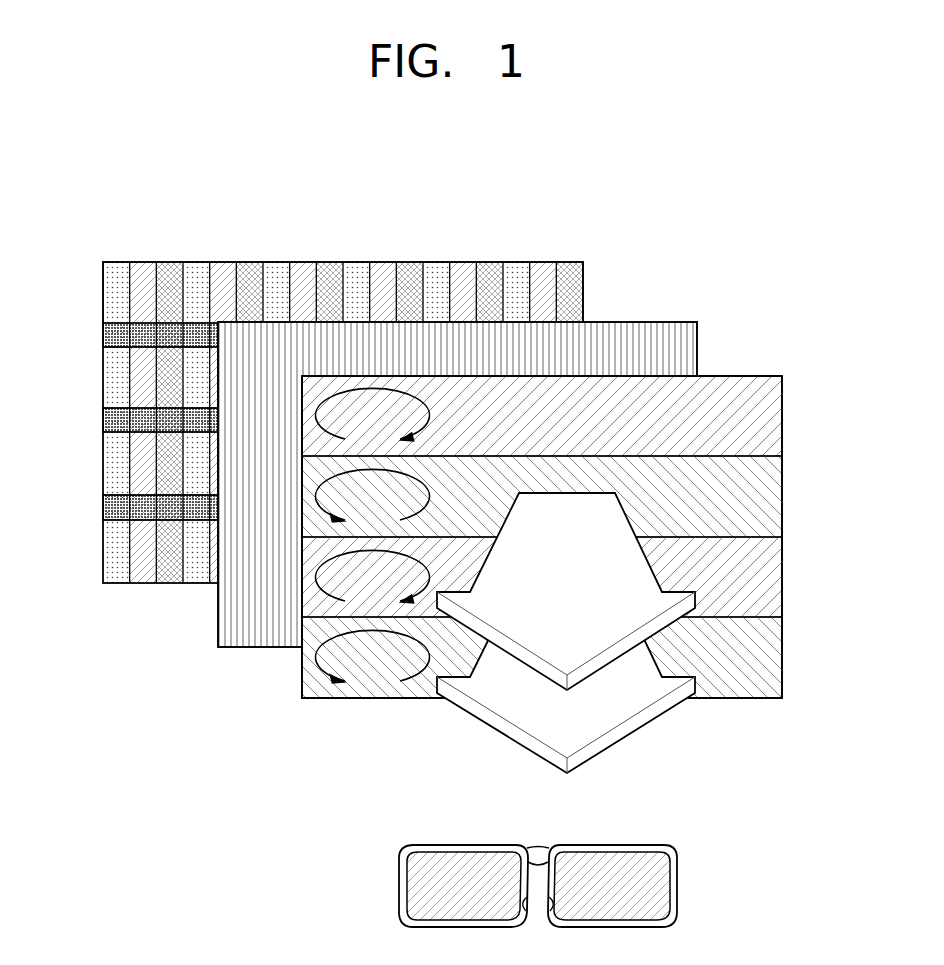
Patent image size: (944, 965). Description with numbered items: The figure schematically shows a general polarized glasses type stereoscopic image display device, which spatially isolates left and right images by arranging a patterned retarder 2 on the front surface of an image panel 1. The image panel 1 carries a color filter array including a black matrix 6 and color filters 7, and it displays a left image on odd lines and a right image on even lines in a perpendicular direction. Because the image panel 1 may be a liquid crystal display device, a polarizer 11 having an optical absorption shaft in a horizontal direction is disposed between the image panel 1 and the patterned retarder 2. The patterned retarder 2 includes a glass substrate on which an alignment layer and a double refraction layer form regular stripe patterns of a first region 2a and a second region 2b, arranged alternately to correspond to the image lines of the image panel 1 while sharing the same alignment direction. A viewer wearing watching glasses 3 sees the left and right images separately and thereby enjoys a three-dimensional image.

The image panel 1 is at (335, 399).
The color filters 7 is at (112, 282).
The black matrix 6 is at (111, 336).
The polarizer 11 is at (691, 343).
The patterned retarder 2 is at (572, 554).
The first region 2a is at (778, 412).
The second region 2b is at (778, 498).
The watching glasses 3 is at (678, 850).